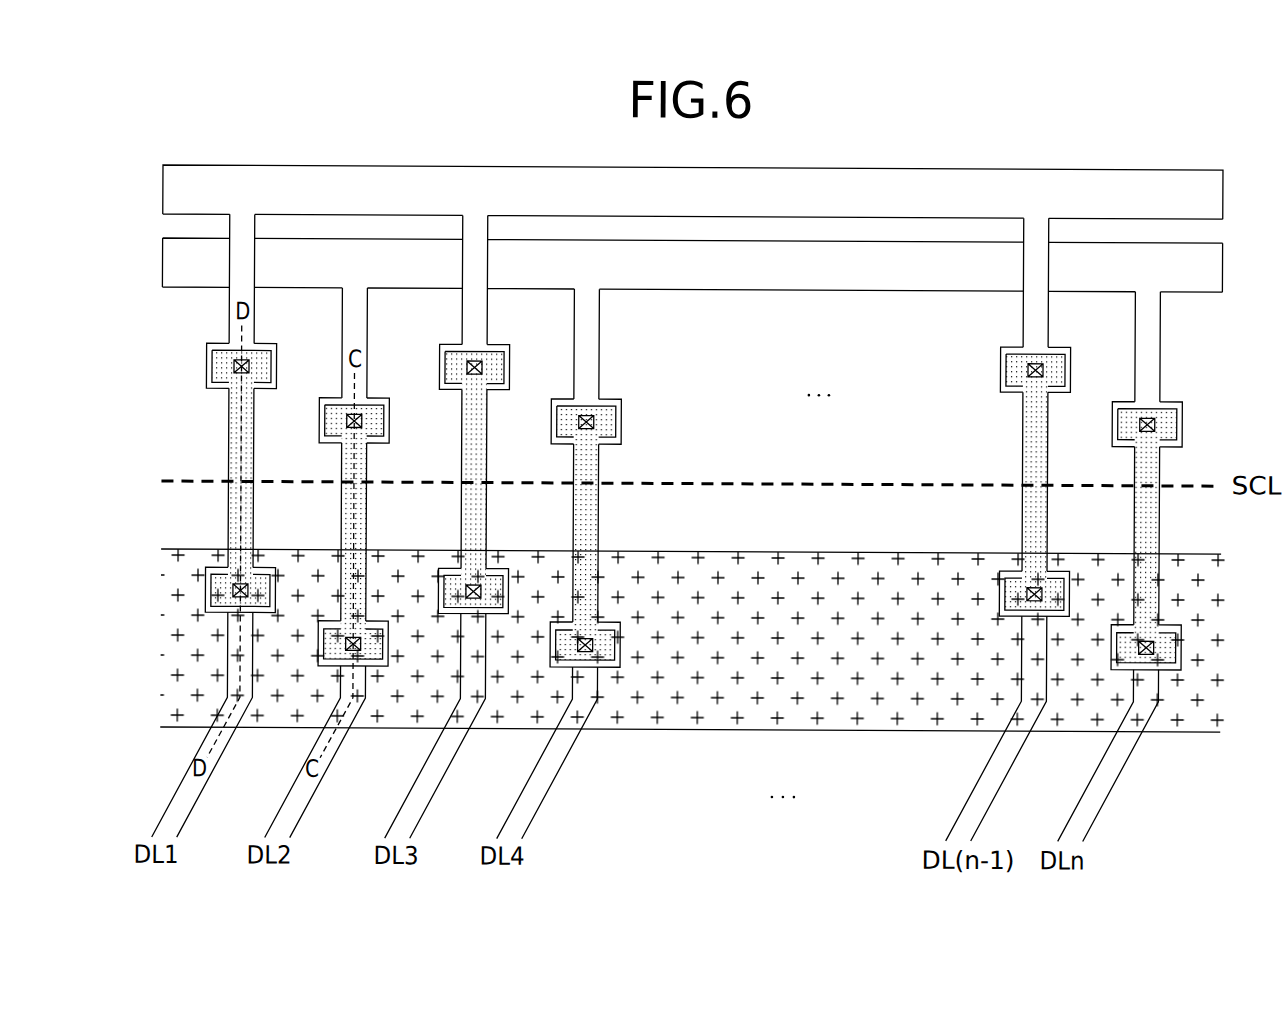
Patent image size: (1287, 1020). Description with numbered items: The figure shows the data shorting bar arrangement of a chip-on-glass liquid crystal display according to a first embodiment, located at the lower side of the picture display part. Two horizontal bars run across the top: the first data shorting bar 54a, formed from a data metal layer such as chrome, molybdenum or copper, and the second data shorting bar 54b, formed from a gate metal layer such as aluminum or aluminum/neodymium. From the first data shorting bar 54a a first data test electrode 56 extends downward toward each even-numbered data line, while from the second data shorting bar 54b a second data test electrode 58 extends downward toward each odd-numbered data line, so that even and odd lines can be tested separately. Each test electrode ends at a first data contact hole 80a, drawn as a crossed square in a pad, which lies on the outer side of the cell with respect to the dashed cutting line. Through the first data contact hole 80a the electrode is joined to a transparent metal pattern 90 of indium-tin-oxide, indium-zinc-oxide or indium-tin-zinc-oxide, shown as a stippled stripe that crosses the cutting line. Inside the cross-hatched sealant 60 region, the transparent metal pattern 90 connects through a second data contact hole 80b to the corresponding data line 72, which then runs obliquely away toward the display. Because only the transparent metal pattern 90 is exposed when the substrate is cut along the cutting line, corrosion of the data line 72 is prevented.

The first data shorting bar 54a is at (1223, 268).
The second data shorting bar 54b is at (1223, 196).
The first data test electrode 56 is at (367, 355).
The second data test electrode 58 is at (228, 316).
The sealant 60 is at (1223, 618).
The data line 72 is at (196, 800).
The first data contact hole 80a is at (251, 364).
The second data contact hole 80b is at (249, 588).
The transparent metal pattern 90 is at (229, 438).